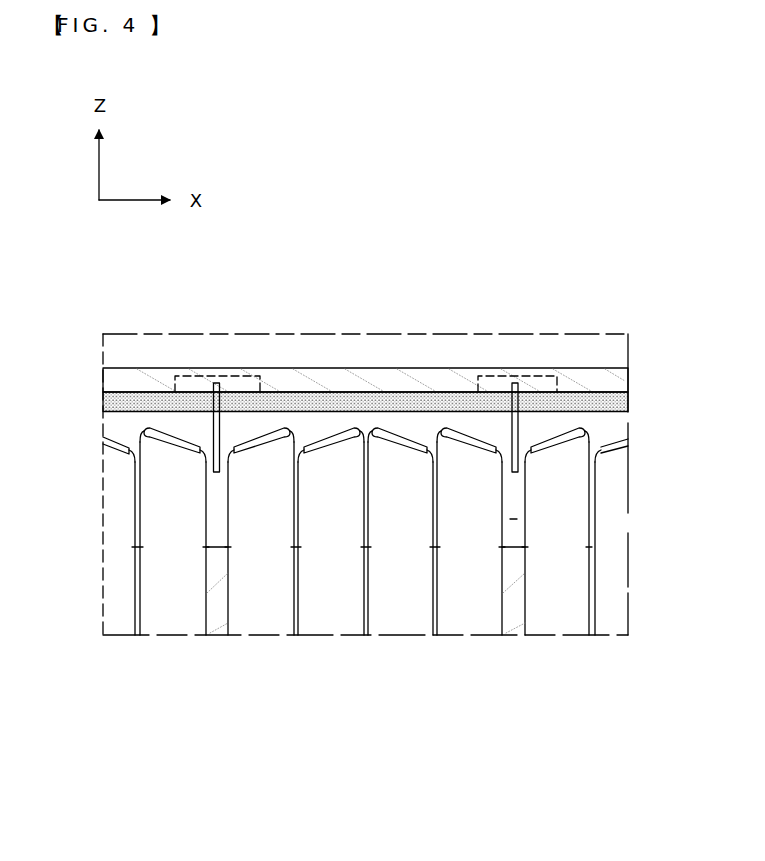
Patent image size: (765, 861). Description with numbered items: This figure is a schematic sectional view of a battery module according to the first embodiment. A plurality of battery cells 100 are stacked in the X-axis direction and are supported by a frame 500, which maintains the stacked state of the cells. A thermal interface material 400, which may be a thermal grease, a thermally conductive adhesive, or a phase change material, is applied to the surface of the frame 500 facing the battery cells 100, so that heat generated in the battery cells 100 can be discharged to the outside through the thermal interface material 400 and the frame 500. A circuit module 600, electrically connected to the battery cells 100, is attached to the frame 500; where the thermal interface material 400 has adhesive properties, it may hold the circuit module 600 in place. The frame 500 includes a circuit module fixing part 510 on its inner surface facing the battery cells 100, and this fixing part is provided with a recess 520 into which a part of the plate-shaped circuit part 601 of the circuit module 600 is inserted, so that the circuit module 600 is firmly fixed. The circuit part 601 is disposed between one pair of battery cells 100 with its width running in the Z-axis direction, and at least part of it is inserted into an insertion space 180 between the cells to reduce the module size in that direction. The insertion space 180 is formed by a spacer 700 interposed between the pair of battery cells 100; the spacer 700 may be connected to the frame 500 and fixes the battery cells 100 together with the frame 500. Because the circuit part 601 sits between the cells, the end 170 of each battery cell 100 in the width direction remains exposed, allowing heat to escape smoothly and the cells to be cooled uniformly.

The battery cell 100 is at (398, 612).
The end in the width direction of the battery cell 170 is at (400, 463).
The insertion space 180 is at (513, 520).
The thermal interface material 400 is at (612, 402).
The frame 500 is at (125, 380).
The circuit module fixing part 510 is at (184, 377).
The recess 520 is at (215, 384).
The circuit module 600 is at (521, 385).
The circuit part 601 is at (212, 463).
The spacer 700 is at (218, 594).